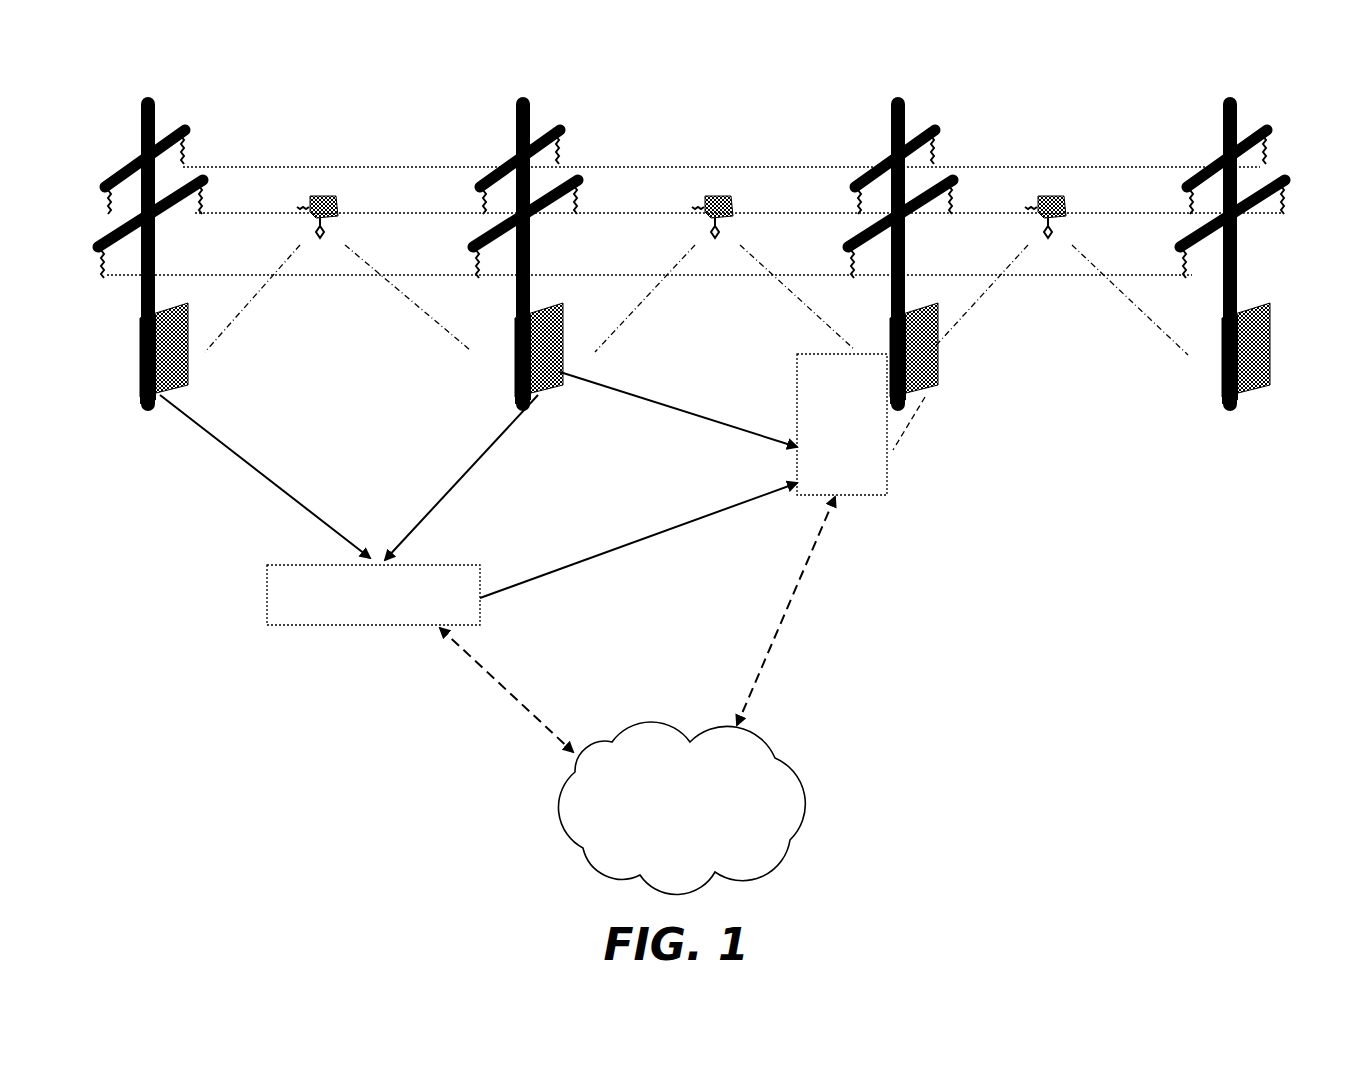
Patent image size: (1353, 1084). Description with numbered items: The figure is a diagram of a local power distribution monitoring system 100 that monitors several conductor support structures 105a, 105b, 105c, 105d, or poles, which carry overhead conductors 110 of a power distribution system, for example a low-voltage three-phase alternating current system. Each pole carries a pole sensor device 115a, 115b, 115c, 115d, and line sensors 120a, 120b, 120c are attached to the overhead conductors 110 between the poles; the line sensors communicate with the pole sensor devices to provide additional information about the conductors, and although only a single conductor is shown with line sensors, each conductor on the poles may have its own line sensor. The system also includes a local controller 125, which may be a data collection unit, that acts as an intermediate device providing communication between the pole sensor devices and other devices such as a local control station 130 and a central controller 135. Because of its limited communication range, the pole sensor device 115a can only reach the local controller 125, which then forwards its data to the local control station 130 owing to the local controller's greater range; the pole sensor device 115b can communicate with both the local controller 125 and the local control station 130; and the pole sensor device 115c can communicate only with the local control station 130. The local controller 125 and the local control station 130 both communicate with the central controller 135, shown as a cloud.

The local power distribution monitoring system 100 is at (160, 86).
The support structure 105a is at (140, 107).
The support structure 105b is at (516, 107).
The support structure 105c is at (886, 107).
The support structure 105d is at (1224, 107).
The overhead conductors 110 is at (234, 167).
The pole sensor device 115a is at (188, 386).
The pole sensor device 115b is at (564, 390).
The pole sensor device 115c is at (934, 390).
The pole sensor device 115d is at (1258, 392).
The line sensor 120a is at (334, 200).
The line sensor 120b is at (724, 200).
The line sensor 120c is at (1048, 200).
The local controller 125 is at (266, 594).
The local control station 130 is at (868, 500).
The central controller 135 is at (556, 810).